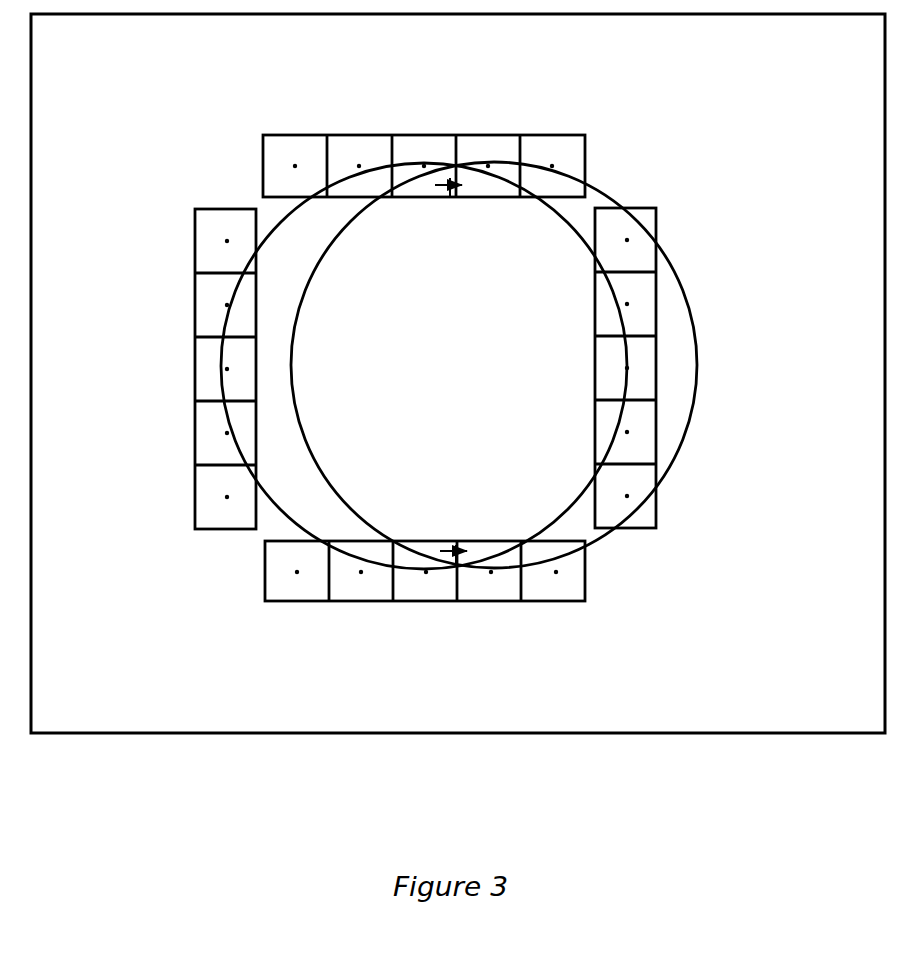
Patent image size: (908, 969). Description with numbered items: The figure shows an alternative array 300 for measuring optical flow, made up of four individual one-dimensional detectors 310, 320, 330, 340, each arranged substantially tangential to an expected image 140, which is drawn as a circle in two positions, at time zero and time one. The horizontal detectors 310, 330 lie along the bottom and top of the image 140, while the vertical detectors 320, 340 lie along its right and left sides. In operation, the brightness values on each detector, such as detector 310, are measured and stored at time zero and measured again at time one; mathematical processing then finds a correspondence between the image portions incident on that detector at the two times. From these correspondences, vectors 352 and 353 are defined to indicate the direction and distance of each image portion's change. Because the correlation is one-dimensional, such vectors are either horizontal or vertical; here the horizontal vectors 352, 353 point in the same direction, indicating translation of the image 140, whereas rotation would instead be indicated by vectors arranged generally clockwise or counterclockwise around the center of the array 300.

The array 300 is at (769, 735).
The image 140 is at (505, 163).
The one-dimensional detector 330 is at (380, 131).
The one-dimensional detector 310 is at (502, 607).
The one-dimensional detector 340 is at (189, 506).
The one-dimensional detector 320 is at (659, 443).
The vector 352 is at (450, 197).
The vector 353 is at (447, 548).